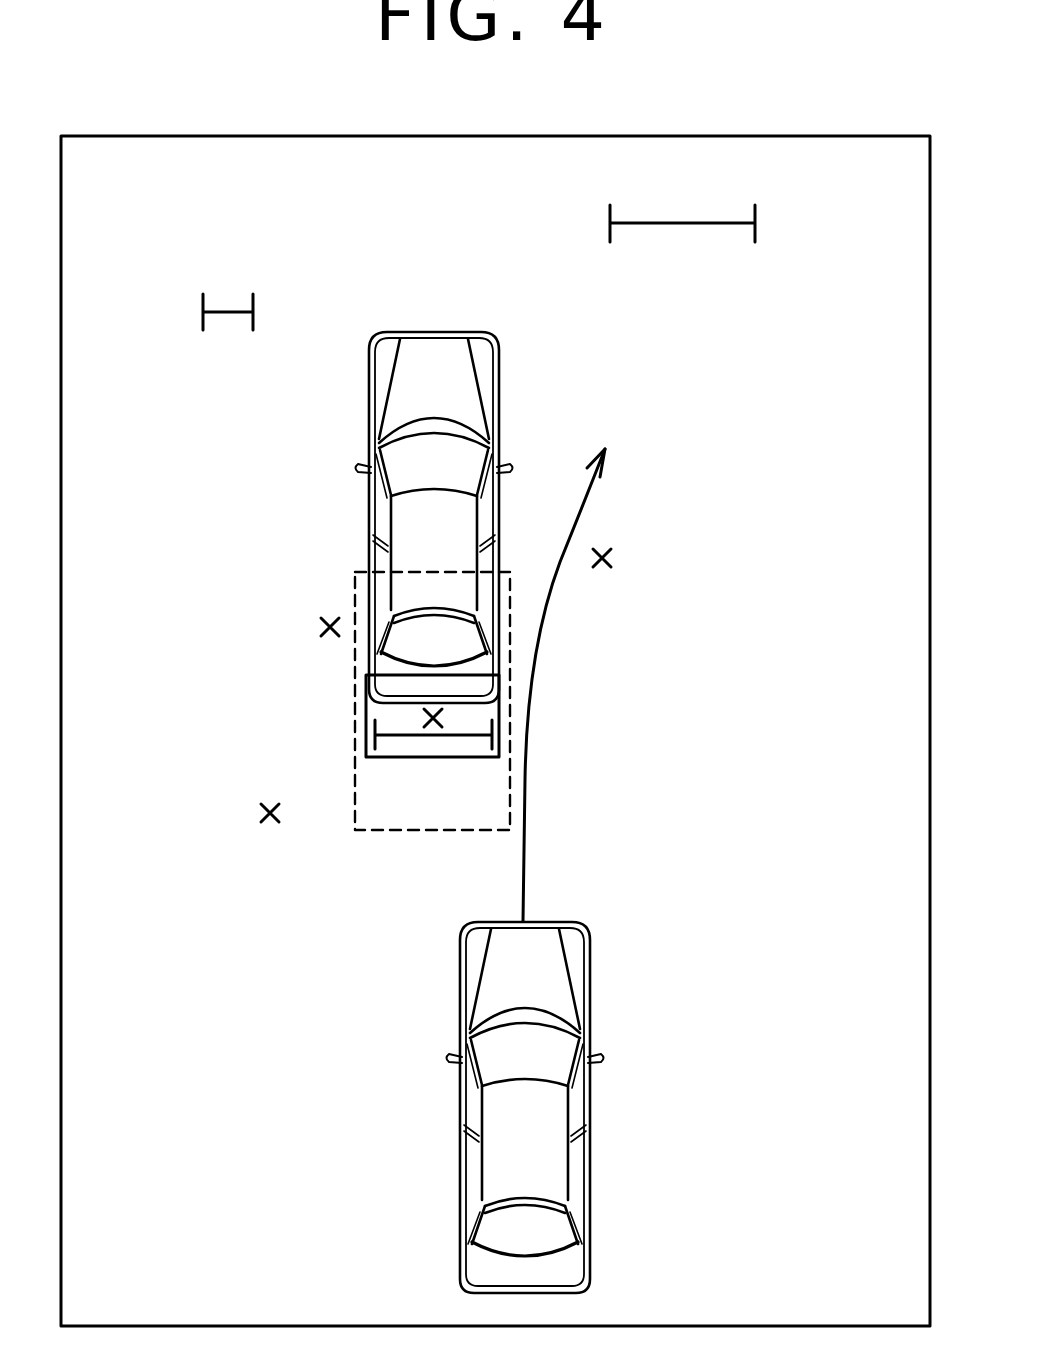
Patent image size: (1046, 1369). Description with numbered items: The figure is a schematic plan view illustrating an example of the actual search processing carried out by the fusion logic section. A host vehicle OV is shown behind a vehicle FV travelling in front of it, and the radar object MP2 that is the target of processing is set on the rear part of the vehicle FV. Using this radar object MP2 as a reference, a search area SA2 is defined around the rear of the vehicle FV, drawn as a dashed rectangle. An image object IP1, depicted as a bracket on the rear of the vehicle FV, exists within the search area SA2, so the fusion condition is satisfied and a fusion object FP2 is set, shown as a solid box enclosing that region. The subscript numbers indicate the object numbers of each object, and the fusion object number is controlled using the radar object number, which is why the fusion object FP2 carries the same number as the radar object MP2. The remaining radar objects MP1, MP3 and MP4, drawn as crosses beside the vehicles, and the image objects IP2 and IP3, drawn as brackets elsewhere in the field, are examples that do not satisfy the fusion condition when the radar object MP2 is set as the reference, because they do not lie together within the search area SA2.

The vehicle in front FV is at (428, 517).
The host vehicle OV is at (537, 1159).
The search area SA2 is at (370, 833).
The fusion object FP2 is at (500, 700).
The image object IP1 is at (474, 738).
The image object IP2 is at (256, 305).
The image object IP3 is at (757, 214).
The radar object MP1 is at (320, 627).
The radar object MP2 is at (432, 728).
The radar object MP3 is at (260, 812).
The radar object MP4 is at (614, 565).